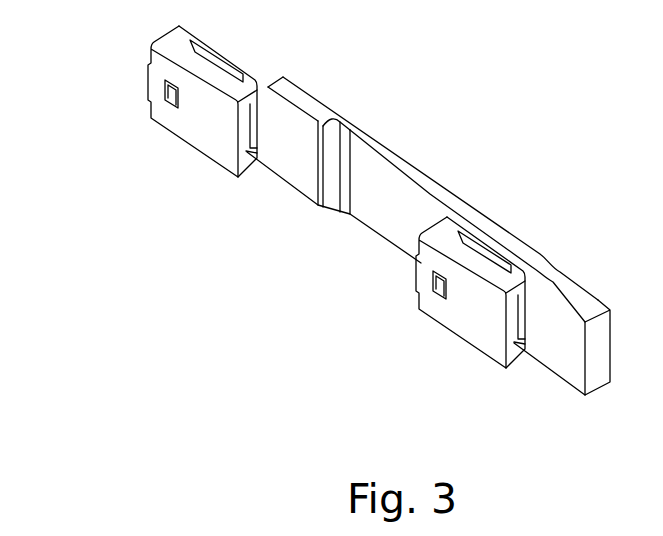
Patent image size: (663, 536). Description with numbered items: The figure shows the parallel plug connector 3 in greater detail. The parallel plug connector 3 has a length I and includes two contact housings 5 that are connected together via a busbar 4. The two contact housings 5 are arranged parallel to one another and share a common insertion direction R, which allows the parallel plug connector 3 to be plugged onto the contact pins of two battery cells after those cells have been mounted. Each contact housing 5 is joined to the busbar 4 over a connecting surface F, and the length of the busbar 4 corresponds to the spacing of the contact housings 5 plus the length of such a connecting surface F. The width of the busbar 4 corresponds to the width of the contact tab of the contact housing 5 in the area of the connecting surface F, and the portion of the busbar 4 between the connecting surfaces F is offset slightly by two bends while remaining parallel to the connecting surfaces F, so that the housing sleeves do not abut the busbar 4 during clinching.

The parallel plug connector 3 is at (516, 150).
The busbar 4 is at (402, 160).
The contact housing 5 is at (218, 122).
The connecting surface F is at (314, 89).
The insertion direction R is at (112, 80).
The length I is at (495, 475).